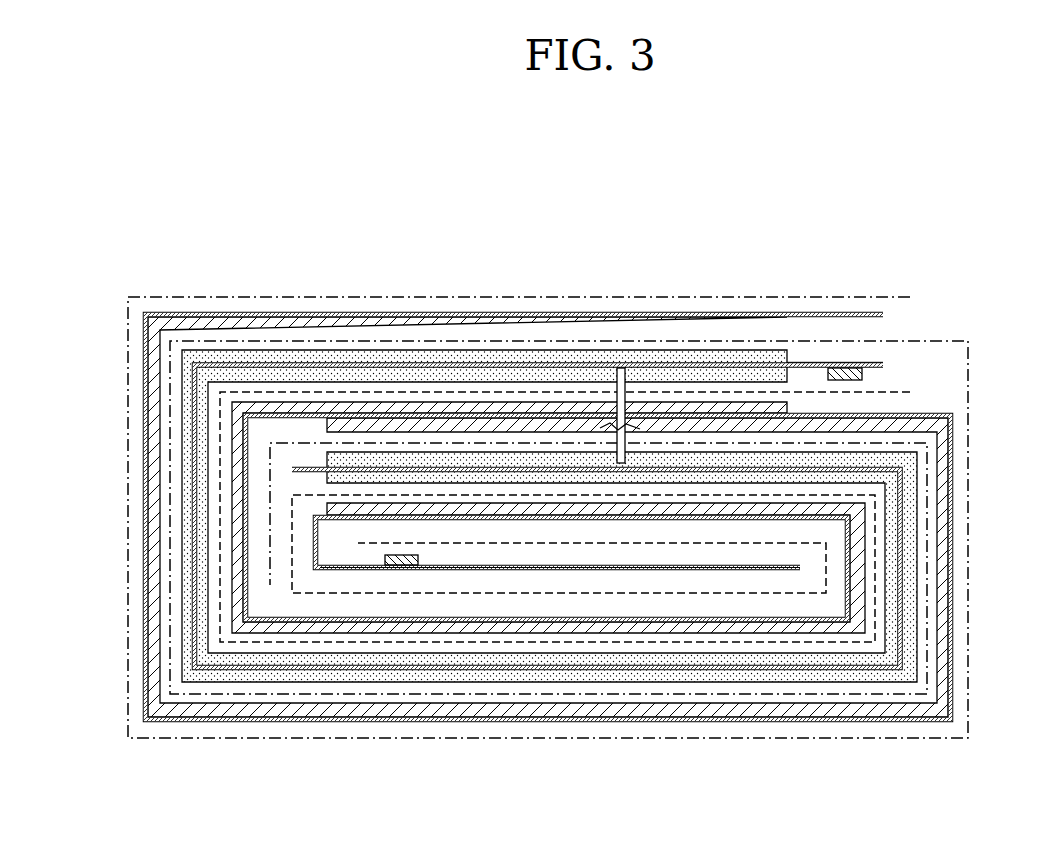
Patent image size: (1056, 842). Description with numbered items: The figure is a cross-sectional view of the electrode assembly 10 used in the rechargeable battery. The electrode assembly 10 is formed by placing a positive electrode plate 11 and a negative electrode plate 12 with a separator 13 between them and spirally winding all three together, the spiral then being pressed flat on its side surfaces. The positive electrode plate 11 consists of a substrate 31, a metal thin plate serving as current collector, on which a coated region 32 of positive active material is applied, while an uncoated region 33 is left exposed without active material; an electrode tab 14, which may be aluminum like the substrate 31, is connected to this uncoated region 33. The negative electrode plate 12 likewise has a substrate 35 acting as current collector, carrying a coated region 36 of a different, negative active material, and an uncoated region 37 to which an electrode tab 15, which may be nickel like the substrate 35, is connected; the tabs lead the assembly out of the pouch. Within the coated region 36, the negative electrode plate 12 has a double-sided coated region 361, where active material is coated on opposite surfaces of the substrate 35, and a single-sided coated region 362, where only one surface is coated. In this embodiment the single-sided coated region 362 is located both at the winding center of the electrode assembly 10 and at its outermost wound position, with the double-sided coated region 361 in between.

The electrode assembly 10 is at (472, 210).
The positive electrode plate 11 is at (606, 465).
The negative electrode plate 12 is at (589, 494).
The separator 13 is at (348, 390).
The electrode tab 14 is at (862, 376).
The electrode tab 15 is at (400, 567).
The substrate 31 is at (498, 467).
The coated region 32 is at (442, 478).
The uncoated region 33 is at (815, 370).
The substrate 35 is at (558, 413).
The coated region 36 is at (548, 494).
The double-sided coated region 361 is at (738, 430).
The single-sided coated region 362 is at (660, 322).
The uncoated region 37 is at (523, 567).